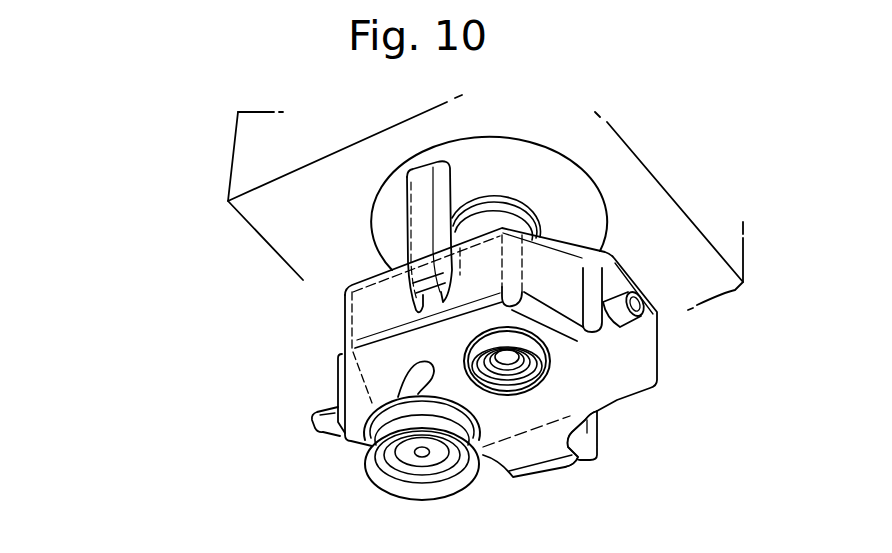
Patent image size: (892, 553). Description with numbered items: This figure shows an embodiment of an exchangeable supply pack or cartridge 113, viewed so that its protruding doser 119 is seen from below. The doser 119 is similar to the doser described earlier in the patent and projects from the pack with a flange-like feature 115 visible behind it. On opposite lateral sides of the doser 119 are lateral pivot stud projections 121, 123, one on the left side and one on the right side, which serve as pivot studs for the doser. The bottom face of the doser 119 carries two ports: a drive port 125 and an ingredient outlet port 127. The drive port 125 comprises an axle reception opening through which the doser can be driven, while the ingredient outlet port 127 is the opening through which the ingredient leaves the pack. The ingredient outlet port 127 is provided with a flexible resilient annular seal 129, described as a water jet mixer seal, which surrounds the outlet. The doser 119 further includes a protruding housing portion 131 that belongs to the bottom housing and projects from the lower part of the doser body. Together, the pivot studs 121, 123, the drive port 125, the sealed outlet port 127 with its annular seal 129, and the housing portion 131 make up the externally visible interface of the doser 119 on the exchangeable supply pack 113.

The exchangeable supply pack 113 is at (196, 184).
The circular flange 115 is at (302, 232).
The doser 119 is at (382, 303).
The lateral pivot stud projection 121 is at (313, 414).
The lateral pivot stud projection 123 is at (623, 312).
The drive port 125 is at (508, 355).
The ingredient outlet port 127 is at (410, 450).
The flexible resilient annular seal 129 is at (448, 482).
The protruding housing portion 131 is at (575, 433).